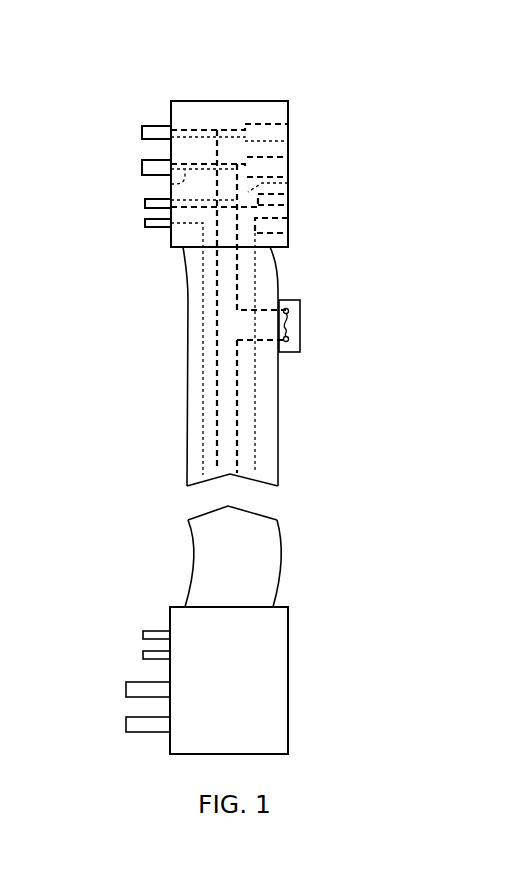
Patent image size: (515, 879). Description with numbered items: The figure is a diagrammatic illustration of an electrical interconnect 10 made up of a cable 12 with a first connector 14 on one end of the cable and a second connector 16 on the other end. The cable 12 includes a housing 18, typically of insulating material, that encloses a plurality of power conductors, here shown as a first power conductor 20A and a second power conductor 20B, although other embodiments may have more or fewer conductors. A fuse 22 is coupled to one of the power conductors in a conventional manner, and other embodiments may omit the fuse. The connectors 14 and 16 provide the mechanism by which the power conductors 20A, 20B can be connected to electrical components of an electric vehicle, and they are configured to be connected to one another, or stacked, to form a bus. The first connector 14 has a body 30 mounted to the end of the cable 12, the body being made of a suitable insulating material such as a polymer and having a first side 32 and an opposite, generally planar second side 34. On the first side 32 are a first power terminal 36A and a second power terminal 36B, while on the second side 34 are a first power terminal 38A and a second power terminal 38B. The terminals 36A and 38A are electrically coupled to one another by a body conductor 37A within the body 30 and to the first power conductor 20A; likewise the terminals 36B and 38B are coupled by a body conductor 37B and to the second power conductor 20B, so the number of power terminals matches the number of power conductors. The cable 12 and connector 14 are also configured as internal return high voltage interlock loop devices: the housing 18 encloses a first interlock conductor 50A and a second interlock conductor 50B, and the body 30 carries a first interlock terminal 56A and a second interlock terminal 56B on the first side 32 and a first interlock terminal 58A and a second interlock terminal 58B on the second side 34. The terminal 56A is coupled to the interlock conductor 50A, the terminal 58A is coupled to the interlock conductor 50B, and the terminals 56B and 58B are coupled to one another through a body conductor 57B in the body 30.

The electrical interconnect 10 is at (339, 119).
The cable 12 is at (277, 442).
The first connector 14 is at (258, 98).
The second connector 16 is at (289, 694).
The housing 18 is at (187, 345).
The first power conductor 20A is at (236, 410).
The second power conductor 20B is at (216, 409).
The fuse 22 is at (300, 325).
The body 30 is at (225, 101).
The first side 32 is at (288, 149).
The second side 34 is at (171, 110).
The first power terminal 36A is at (288, 172).
The second power terminal 36B is at (290, 112).
The body conductor 37A is at (171, 184).
The body conductor 37B is at (192, 128).
The first power terminal 38A is at (142, 167).
The second power terminal 38B is at (142, 128).
The first interlock conductor 50A is at (278, 463).
The second interlock conductor 50B is at (202, 475).
The first interlock terminal 56A is at (288, 230).
The second interlock terminal 56B is at (288, 202).
The body conductor 57B is at (288, 183).
The first interlock terminal 58A is at (145, 227).
The second interlock terminal 58B is at (145, 202).